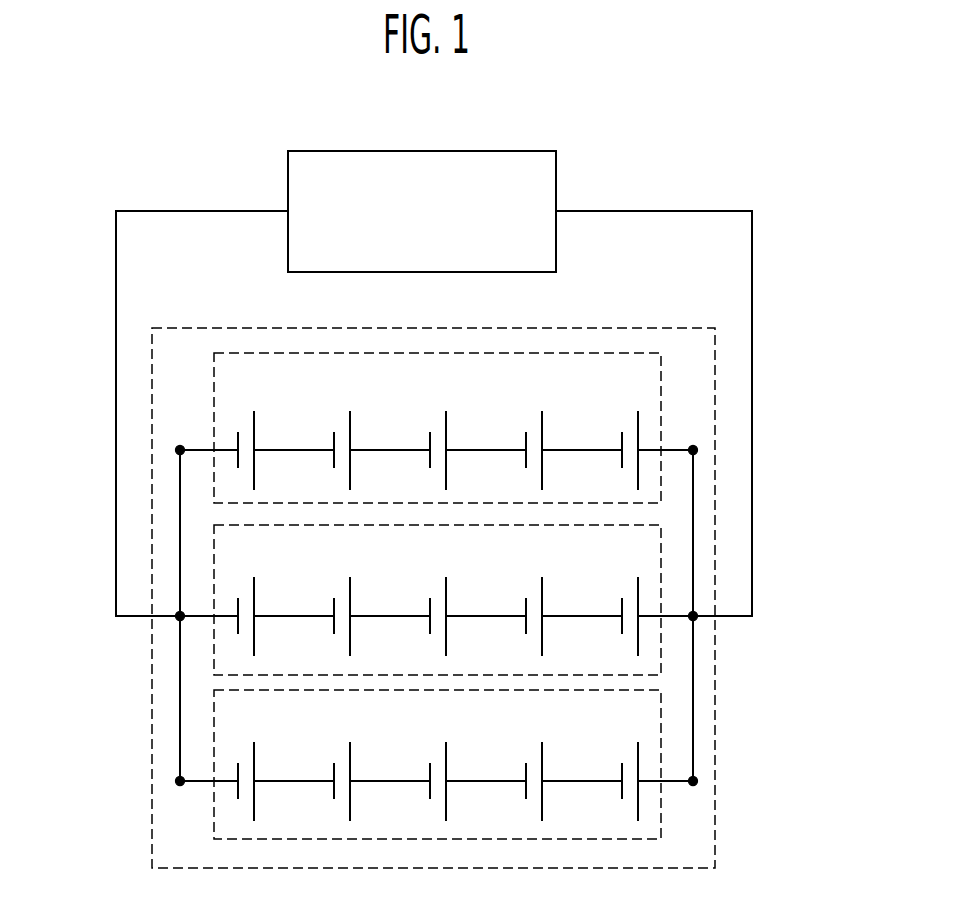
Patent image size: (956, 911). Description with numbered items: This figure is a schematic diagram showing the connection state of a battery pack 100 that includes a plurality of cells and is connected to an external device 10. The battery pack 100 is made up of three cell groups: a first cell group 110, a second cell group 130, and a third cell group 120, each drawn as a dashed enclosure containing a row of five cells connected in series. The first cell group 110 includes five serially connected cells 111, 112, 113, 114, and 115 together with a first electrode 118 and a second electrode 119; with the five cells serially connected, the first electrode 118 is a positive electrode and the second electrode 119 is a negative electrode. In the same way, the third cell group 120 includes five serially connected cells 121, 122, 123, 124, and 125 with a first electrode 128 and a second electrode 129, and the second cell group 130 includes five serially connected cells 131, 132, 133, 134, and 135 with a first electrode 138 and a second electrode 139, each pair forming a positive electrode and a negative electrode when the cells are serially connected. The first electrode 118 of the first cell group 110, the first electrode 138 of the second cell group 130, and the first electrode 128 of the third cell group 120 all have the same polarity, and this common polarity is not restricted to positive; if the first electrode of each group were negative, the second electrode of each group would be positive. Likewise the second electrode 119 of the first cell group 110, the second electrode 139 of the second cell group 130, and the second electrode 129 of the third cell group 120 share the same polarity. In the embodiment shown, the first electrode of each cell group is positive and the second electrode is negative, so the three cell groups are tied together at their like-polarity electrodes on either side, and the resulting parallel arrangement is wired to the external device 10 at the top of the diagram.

The external device 10 is at (435, 151).
The battery pack 100 is at (715, 853).
The first cell group 110 is at (661, 398).
The cell 111 is at (636, 433).
The cell 112 is at (541, 433).
The cell 113 is at (445, 433).
The cell 114 is at (349, 433).
The cell 115 is at (253, 433).
The first electrode 118 is at (693, 450).
The second electrode 119 is at (180, 450).
The third cell group 120 is at (661, 565).
The cell 121 is at (636, 598).
The cell 122 is at (541, 598).
The cell 123 is at (445, 598).
The cell 124 is at (349, 598).
The cell 125 is at (253, 598).
The first electrode 128 is at (693, 616).
The second electrode 129 is at (180, 616).
The second cell group 130 is at (661, 732).
The cell 131 is at (636, 763).
The cell 132 is at (541, 763).
The cell 133 is at (445, 763).
The cell 134 is at (349, 763).
The cell 135 is at (253, 763).
The first electrode 138 is at (693, 781).
The second electrode 139 is at (180, 781).